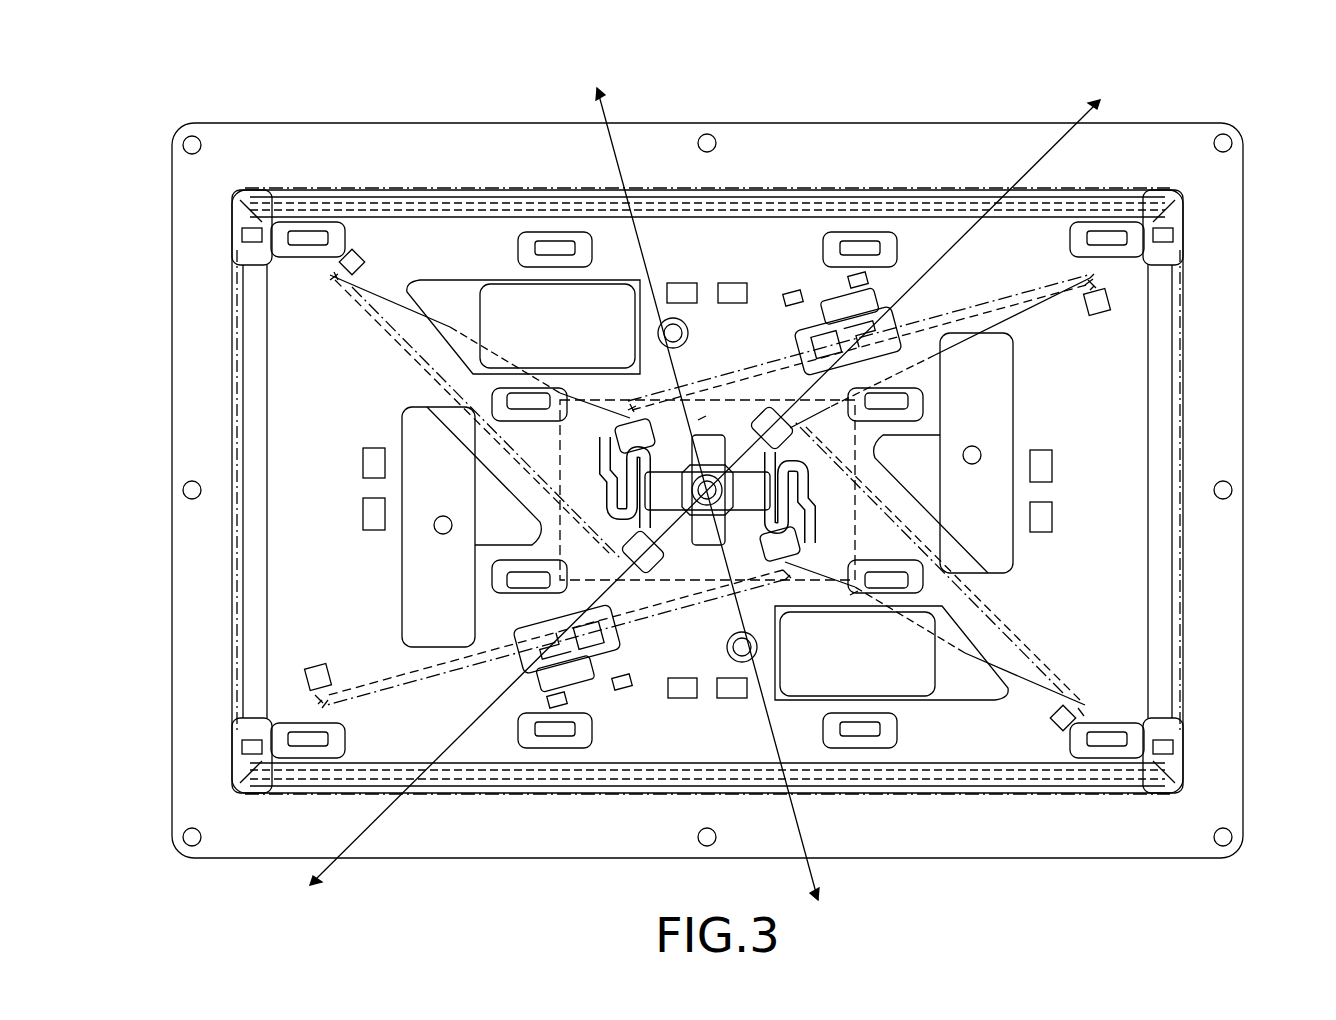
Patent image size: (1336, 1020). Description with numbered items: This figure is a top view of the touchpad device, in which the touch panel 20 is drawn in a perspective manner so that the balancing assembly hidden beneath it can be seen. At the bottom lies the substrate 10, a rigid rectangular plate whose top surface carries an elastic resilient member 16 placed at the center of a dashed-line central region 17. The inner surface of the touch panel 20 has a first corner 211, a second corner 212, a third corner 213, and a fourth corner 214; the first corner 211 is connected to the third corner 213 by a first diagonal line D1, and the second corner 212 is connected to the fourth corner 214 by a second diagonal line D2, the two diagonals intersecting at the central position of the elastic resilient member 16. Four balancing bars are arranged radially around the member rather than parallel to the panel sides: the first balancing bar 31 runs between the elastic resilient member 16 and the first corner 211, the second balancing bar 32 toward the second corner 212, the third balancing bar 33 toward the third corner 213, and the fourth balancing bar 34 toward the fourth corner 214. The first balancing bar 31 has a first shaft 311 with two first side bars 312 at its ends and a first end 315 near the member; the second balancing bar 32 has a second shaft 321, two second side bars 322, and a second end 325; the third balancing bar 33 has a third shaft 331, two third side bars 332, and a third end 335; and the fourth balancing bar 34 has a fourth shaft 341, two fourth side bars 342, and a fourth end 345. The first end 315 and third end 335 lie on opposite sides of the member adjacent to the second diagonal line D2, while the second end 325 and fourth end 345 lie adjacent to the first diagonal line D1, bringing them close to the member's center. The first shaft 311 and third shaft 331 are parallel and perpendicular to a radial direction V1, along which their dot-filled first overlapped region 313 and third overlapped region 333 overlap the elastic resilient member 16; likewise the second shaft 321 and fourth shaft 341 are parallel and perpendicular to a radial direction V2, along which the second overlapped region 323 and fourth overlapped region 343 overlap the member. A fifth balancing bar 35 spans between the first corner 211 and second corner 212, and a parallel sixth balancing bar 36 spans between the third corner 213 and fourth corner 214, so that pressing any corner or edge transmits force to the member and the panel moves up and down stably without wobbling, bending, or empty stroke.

The substrate 10 is at (232, 122).
The touch panel 20 is at (1182, 330).
The elastic resilient member 16 is at (698, 517).
The central region 17 is at (560, 452).
The first corner 211 is at (250, 192).
The second corner 212 is at (1165, 192).
The third corner 213 is at (1180, 795).
The fourth corner 214 is at (235, 770).
The first balancing bar 31 is at (335, 292).
The first shaft 311 is at (388, 345).
The first side bars 312 is at (350, 250).
The first overlapped region 313 is at (520, 624).
The first end 315 is at (628, 552).
The second balancing bar 32 is at (1095, 278).
The second shaft 321 is at (935, 345).
The second side bars 322 is at (628, 408).
The second overlapped region 323 is at (700, 425).
The second end 325 is at (640, 425).
The third balancing bar 33 is at (1040, 645).
The third shaft 331 is at (1010, 612).
The third side bars 332 is at (795, 300).
The third overlapped region 333 is at (790, 432).
The third end 335 is at (870, 362).
The fourth balancing bar 34 is at (318, 705).
The fourth shaft 341 is at (555, 598).
The fourth side bars 342 is at (308, 675).
The fourth overlapped region 343 is at (770, 560).
The fourth end 345 is at (858, 598).
The fifth balancing bar 35 is at (855, 195).
The sixth balancing bar 36 is at (512, 795).
The radial direction V1 is at (726, 476).
The radial direction V2 is at (696, 471).
The first diagonal line D1 is at (560, 578).
The second diagonal line D2 is at (1005, 398).